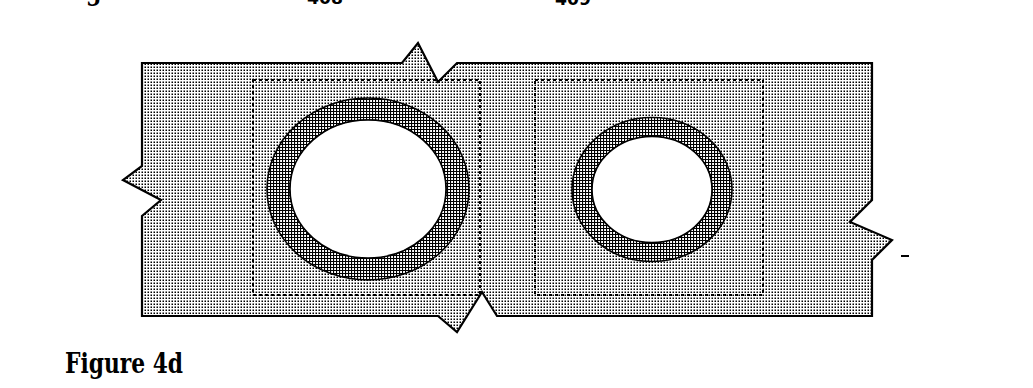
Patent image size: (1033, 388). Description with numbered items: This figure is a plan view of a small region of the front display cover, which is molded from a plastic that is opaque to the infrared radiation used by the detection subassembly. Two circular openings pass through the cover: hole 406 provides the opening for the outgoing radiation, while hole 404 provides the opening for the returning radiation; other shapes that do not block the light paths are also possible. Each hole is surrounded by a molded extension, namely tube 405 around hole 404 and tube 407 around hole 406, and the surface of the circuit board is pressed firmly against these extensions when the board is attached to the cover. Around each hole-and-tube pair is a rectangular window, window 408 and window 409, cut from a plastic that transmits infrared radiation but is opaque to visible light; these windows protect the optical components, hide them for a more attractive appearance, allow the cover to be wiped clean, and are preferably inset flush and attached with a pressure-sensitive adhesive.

The hole 404 is at (375, 192).
The tube 405 is at (293, 137).
The hole 406 is at (656, 195).
The tube 407 is at (619, 133).
The window 408 is at (364, 82).
The window 409 is at (731, 82).